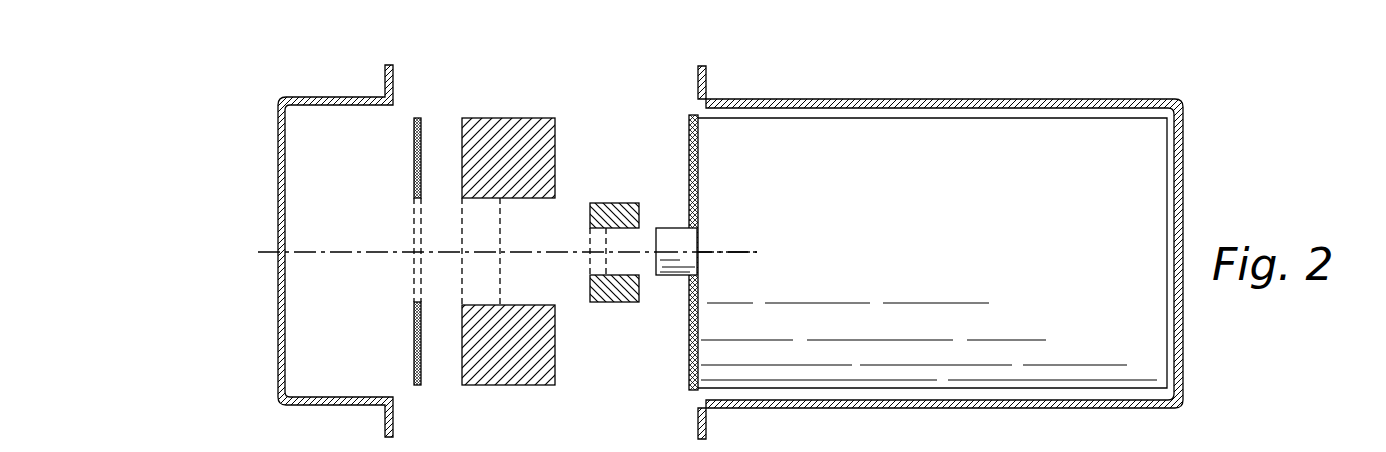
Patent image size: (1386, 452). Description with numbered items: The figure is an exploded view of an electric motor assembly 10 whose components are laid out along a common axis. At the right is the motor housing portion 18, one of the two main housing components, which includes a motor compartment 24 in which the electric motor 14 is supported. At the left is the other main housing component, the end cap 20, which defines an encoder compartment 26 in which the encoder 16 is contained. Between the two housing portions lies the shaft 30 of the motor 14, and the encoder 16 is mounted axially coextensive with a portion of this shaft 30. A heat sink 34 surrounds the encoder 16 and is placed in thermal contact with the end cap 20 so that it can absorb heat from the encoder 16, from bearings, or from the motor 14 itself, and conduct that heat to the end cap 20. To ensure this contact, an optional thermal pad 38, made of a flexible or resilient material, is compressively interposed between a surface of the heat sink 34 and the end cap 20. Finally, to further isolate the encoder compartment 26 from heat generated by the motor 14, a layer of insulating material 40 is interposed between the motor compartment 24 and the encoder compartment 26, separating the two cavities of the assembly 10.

The electric motor assembly 10 is at (193, 134).
The electric motor 14 is at (980, 265).
The encoder 16 is at (606, 203).
The motor housing portion 18 is at (1078, 102).
The end cap 20 is at (278, 175).
The motor compartment 24 is at (897, 113).
The encoder compartment 26 is at (339, 312).
The shaft 30 is at (672, 263).
The heat sink 34 is at (505, 373).
The thermal pad 38 is at (421, 148).
The insulating material 40 is at (688, 167).